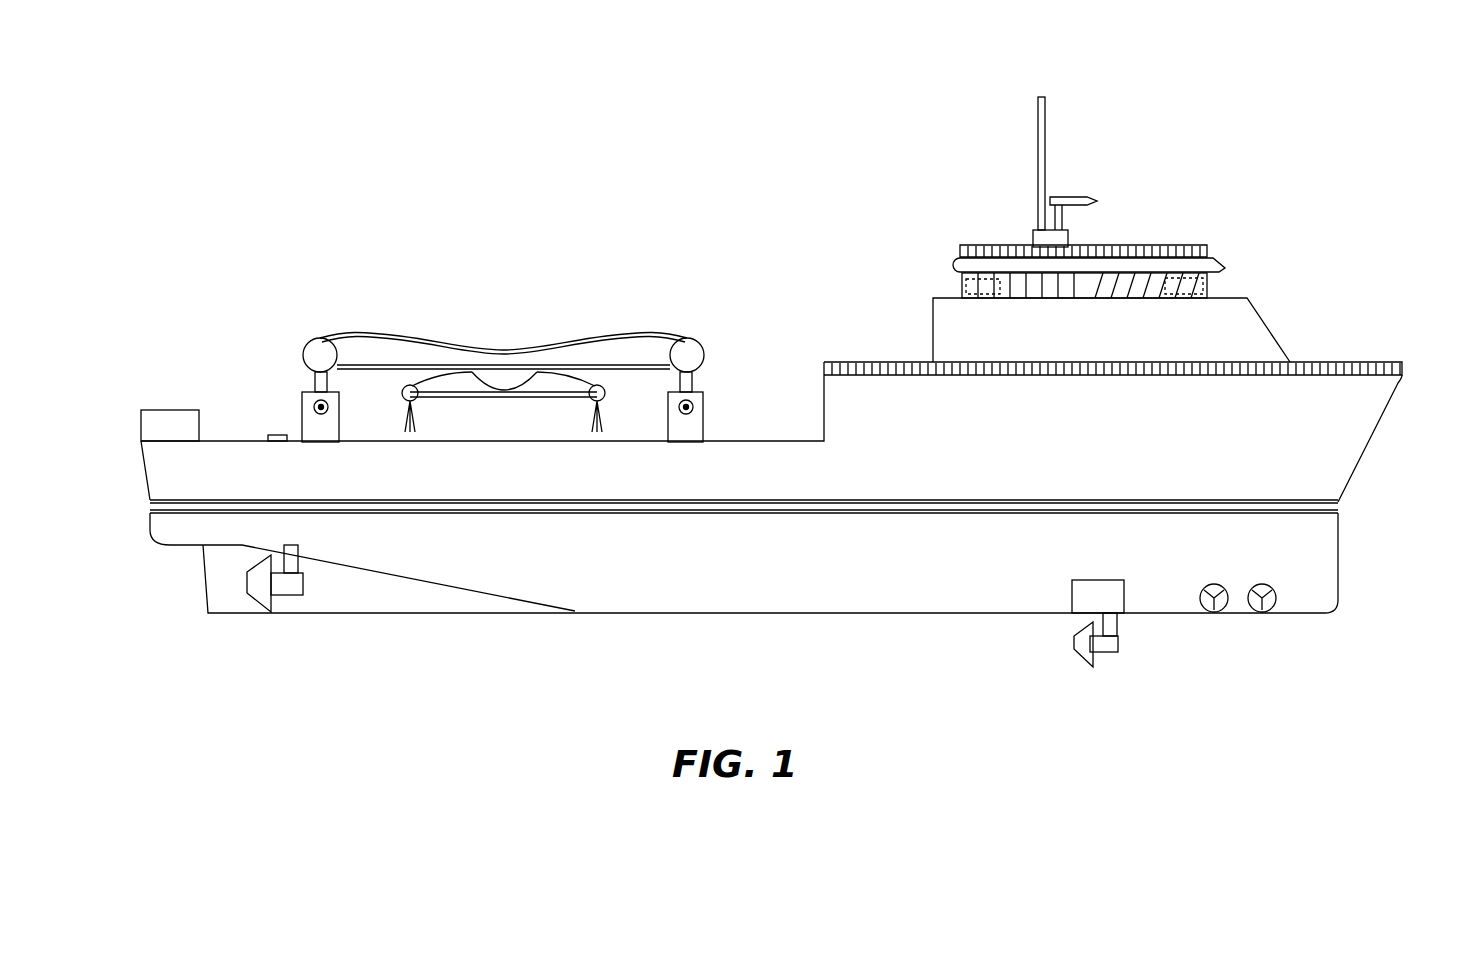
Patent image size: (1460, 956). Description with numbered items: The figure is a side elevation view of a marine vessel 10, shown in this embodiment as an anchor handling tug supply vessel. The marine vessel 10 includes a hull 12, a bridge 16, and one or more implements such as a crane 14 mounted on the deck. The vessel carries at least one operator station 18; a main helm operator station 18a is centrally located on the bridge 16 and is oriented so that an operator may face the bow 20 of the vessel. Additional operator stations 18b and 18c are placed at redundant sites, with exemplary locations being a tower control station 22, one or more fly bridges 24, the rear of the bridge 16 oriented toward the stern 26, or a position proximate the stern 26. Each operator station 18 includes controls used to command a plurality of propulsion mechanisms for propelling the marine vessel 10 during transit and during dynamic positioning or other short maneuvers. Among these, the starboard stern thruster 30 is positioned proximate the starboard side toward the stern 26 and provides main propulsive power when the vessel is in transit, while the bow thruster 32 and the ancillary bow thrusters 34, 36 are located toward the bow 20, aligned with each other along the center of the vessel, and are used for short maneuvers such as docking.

The marine vessel 10 is at (765, 183).
The hull 12 is at (1328, 462).
The crane 14 is at (502, 380).
The bridge 16 is at (1140, 283).
The operator station 18 is at (200, 426).
The main helm operator station 18a is at (1207, 293).
The additional operator station 18b is at (960, 296).
The additional operator station 18c is at (168, 410).
The bow 20 is at (1404, 378).
The tower control station 22 is at (1062, 237).
The fly bridge 24 is at (1078, 290).
The stern 26 is at (141, 427).
The starboard stern thruster 30 is at (258, 595).
The bow thruster 32 is at (1083, 652).
The ancillary bow thruster 34 is at (1207, 610).
The ancillary bow thruster 36 is at (1255, 610).